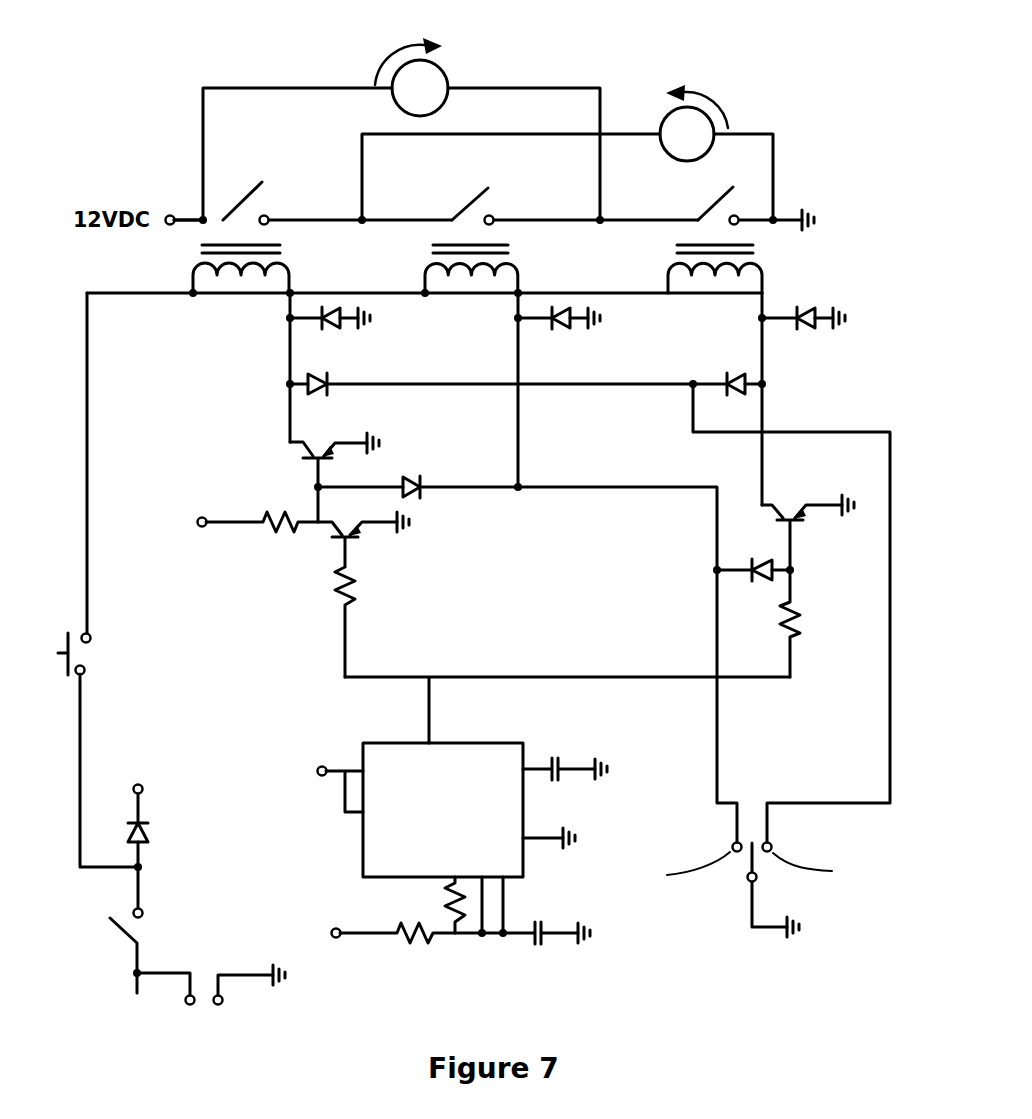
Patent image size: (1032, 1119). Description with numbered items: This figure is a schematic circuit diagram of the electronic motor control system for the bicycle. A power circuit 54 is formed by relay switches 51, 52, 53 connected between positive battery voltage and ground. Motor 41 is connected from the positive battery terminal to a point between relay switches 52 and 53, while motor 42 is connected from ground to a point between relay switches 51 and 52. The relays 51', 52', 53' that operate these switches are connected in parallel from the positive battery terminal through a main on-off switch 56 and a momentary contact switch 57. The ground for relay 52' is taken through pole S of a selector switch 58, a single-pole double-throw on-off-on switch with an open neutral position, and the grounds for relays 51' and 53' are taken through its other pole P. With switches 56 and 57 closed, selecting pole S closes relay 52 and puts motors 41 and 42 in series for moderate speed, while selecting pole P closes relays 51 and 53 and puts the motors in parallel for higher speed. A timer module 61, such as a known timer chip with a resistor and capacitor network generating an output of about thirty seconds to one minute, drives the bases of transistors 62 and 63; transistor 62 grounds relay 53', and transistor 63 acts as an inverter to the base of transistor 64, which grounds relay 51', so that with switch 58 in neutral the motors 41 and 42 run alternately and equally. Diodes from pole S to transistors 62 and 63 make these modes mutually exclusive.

The motor 41 is at (427, 82).
The motor 42 is at (673, 125).
The relay switch 51 is at (275, 168).
The relay switch 52 is at (506, 184).
The relay switch 53 is at (766, 180).
The power circuit 54 is at (180, 196).
The relay 51' is at (240, 297).
The relay 52' is at (471, 295).
The relay 53' is at (715, 286).
The main on-off switch 56 is at (140, 925).
The momentary contact switch 57 is at (92, 652).
The selector switch 58 is at (750, 810).
The timer module 61 is at (382, 773).
The transistor 62 is at (792, 507).
The transistor 63 is at (363, 538).
The transistor 64 is at (315, 440).